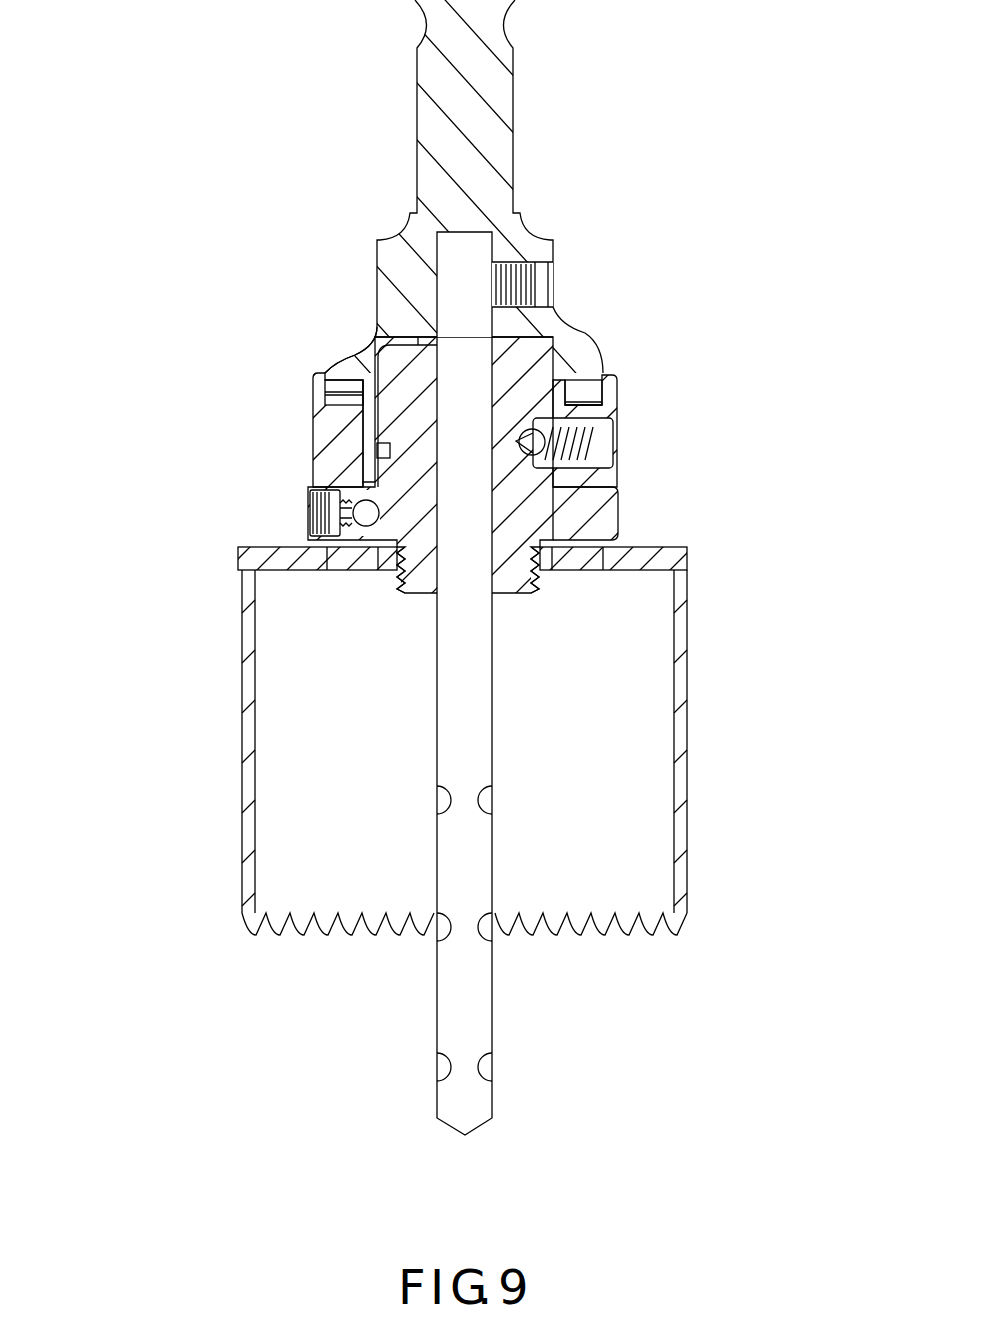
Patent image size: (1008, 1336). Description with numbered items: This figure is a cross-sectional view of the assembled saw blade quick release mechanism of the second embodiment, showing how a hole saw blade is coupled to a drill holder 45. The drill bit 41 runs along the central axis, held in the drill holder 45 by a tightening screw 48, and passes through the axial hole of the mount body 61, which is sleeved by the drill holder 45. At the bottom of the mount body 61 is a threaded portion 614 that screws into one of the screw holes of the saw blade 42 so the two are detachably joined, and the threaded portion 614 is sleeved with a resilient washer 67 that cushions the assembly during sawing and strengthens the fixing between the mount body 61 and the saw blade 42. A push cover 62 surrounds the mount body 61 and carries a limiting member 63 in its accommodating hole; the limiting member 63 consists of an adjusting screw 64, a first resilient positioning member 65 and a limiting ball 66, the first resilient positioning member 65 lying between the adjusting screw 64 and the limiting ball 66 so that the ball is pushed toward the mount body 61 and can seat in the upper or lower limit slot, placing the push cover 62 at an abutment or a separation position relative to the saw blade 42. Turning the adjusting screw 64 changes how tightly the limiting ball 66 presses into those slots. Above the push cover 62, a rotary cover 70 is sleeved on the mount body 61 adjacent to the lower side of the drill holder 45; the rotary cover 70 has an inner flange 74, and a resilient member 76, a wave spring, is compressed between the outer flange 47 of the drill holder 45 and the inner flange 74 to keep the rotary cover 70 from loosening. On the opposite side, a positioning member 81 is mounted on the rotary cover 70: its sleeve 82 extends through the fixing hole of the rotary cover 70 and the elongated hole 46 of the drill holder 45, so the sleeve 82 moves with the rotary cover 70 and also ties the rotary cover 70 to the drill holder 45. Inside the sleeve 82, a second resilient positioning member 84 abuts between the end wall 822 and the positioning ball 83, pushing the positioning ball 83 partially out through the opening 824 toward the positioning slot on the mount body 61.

The drill bit 41 is at (478, 1030).
The saw blade 42 is at (690, 800).
The drill holder 45 is at (500, 93).
The elongated hole 46 is at (620, 505).
The outer flange 47 is at (353, 333).
The tightening screw 48 is at (550, 283).
The mount body 61 is at (512, 499).
The push cover 62 is at (560, 570).
The limiting member 63 is at (232, 557).
The adjusting screw 64 is at (313, 512).
The first resilient positioning member 65 is at (335, 530).
The limiting ball 66 is at (366, 526).
The resilient washer 67 is at (570, 585).
The rotary cover 70 is at (512, 450).
The inner flange 74 is at (345, 452).
The resilient member 76 is at (348, 400).
The positioning member 81 is at (512, 450).
The sleeve 82 is at (622, 440).
The positioning ball 83 is at (533, 438).
The second resilient positioning member 84 is at (575, 430).
The threaded portion 614 is at (415, 592).
The end wall 822 is at (605, 458).
The opening 824 is at (530, 458).